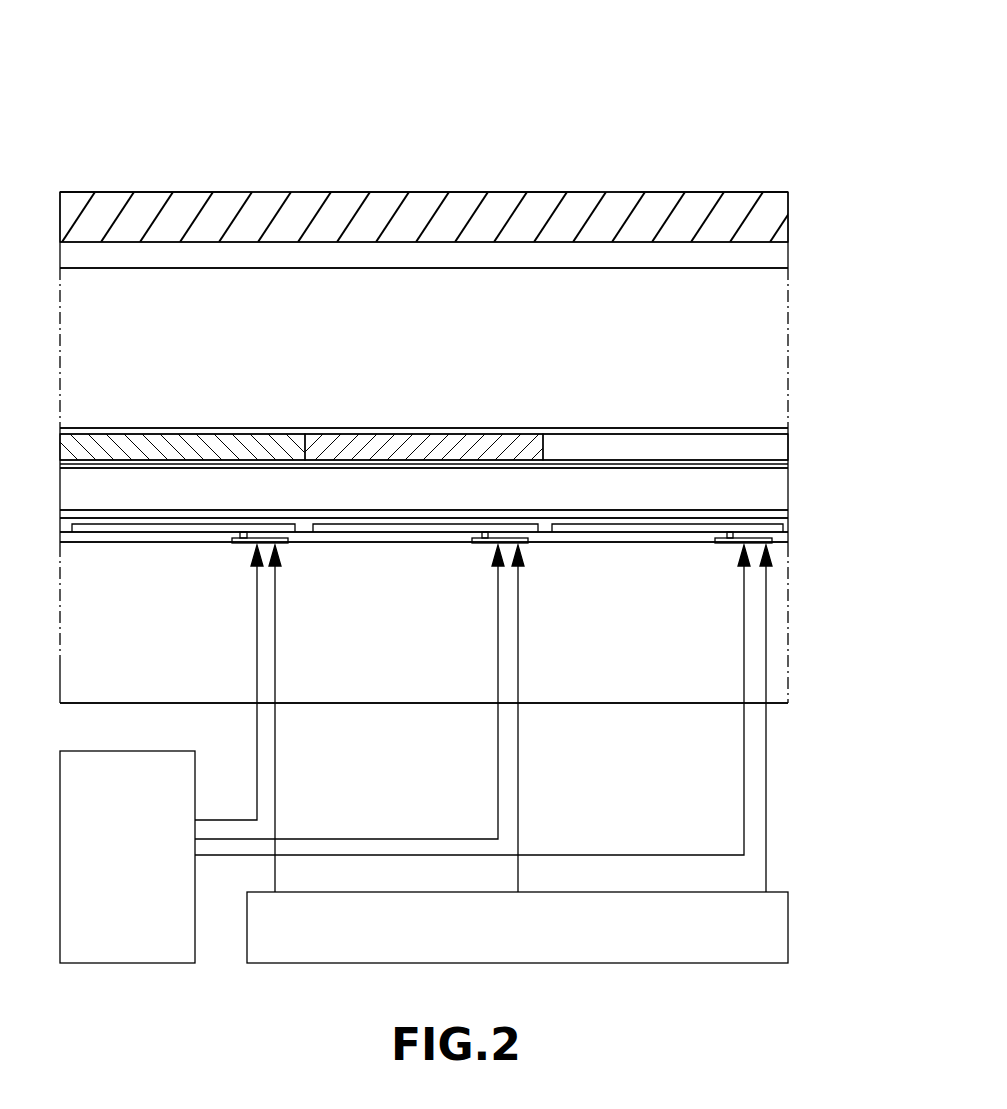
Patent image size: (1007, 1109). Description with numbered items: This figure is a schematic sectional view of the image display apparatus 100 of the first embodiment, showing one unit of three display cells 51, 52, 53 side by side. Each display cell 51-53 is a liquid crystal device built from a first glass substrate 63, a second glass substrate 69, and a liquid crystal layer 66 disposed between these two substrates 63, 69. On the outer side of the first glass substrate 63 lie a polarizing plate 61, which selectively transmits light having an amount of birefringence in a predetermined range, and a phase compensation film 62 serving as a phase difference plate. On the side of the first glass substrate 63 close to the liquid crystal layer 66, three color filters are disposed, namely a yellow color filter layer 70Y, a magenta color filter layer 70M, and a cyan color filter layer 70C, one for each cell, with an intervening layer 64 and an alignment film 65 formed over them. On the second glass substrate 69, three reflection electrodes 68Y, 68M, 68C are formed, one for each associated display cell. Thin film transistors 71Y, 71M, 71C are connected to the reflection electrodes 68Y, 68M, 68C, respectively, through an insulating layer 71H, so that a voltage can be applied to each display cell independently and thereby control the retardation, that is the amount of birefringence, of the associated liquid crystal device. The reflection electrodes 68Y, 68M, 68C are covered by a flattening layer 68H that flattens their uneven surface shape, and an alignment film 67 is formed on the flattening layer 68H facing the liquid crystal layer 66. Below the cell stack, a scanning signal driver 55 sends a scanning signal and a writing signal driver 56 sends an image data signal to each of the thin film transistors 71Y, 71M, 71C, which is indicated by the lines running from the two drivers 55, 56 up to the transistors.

The image display apparatus 100 is at (462, 85).
The display cell 51 is at (208, 186).
The display cell 52 is at (450, 186).
The display cell 53 is at (693, 186).
The polarizing plate 61 is at (770, 211).
The phase compensation film 62 is at (772, 256).
The first glass substrate 63 is at (772, 326).
The color filter protective layer 64 is at (780, 432).
The alignment film 65 is at (780, 466).
The liquid crystal layer 66 is at (778, 490).
The alignment film 67 is at (786, 515).
The flattening layer 68H is at (786, 527).
The reflection electrode 68Y is at (173, 528).
The reflection electrode 68M is at (410, 528).
The reflection electrode 68C is at (645, 528).
The second glass substrate 69 is at (782, 660).
The yellow color filter layer 70Y is at (143, 447).
The magenta color filter layer 70M is at (402, 447).
The cyan color filter layer 70C is at (605, 442).
The insulating layer 71H is at (786, 538).
The thin film transistor 71Y is at (237, 547).
The thin film transistor 71M is at (478, 547).
The thin film transistor 71C is at (727, 548).
The scanning signal driver 55 is at (517, 754).
The writing signal driver 56 is at (405, 754).